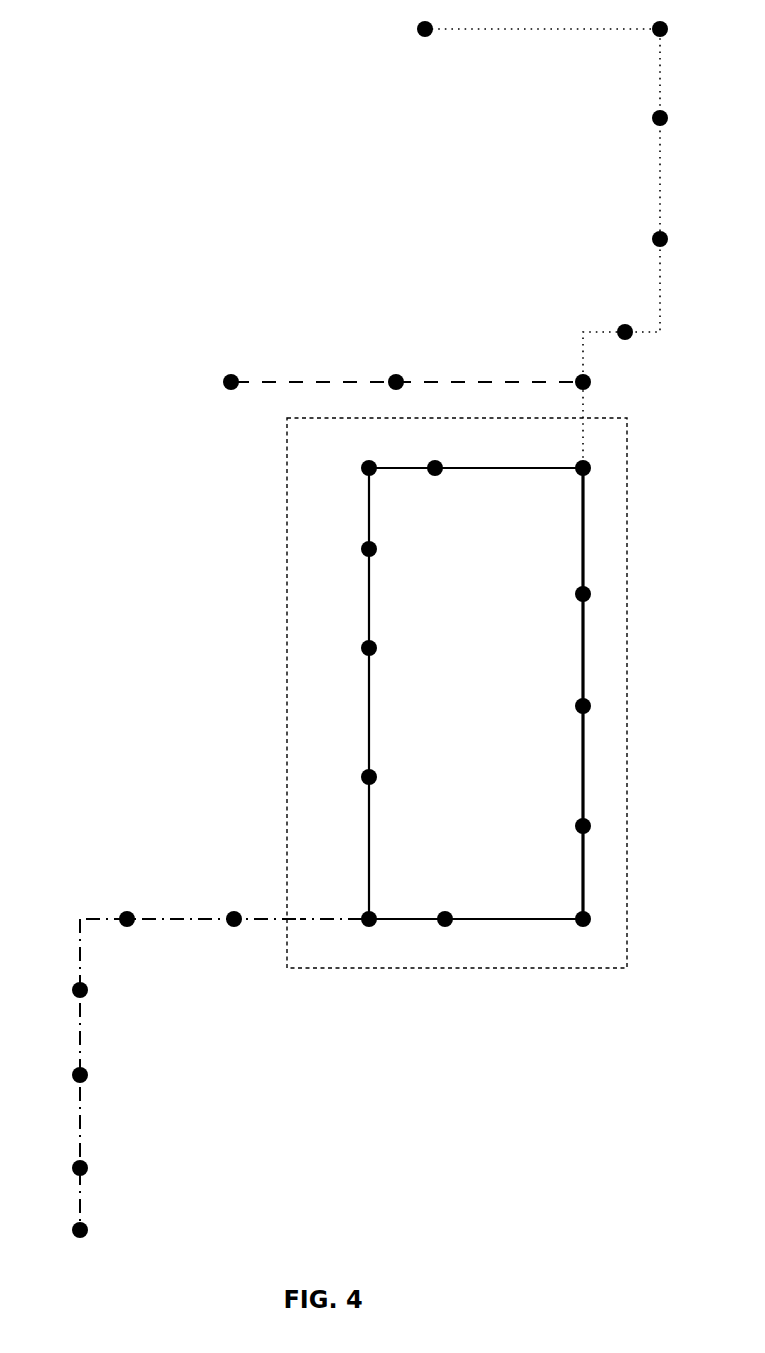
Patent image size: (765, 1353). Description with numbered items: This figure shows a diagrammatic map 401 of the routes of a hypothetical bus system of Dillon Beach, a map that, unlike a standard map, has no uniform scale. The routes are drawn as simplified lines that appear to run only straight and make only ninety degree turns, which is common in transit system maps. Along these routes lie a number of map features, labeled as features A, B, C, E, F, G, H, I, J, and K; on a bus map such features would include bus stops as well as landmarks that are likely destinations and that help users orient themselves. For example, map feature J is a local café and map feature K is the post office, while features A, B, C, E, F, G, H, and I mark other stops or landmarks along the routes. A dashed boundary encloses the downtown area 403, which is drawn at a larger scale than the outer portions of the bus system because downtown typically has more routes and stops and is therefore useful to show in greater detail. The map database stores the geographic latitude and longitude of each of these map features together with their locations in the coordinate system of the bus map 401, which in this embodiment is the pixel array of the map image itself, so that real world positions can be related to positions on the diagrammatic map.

The map 401 is at (128, 196).
The downtown area 403 is at (627, 718).
The map feature A is at (476, 481).
The map feature B is at (593, 386).
The map feature C is at (593, 693).
The map feature E is at (360, 687).
The map feature F is at (394, 383).
The map feature G is at (182, 1069).
The map feature H is at (551, 245).
The map feature I is at (476, 909).
The map feature (local café) J is at (333, 937).
The map feature (post office) K is at (369, 933).